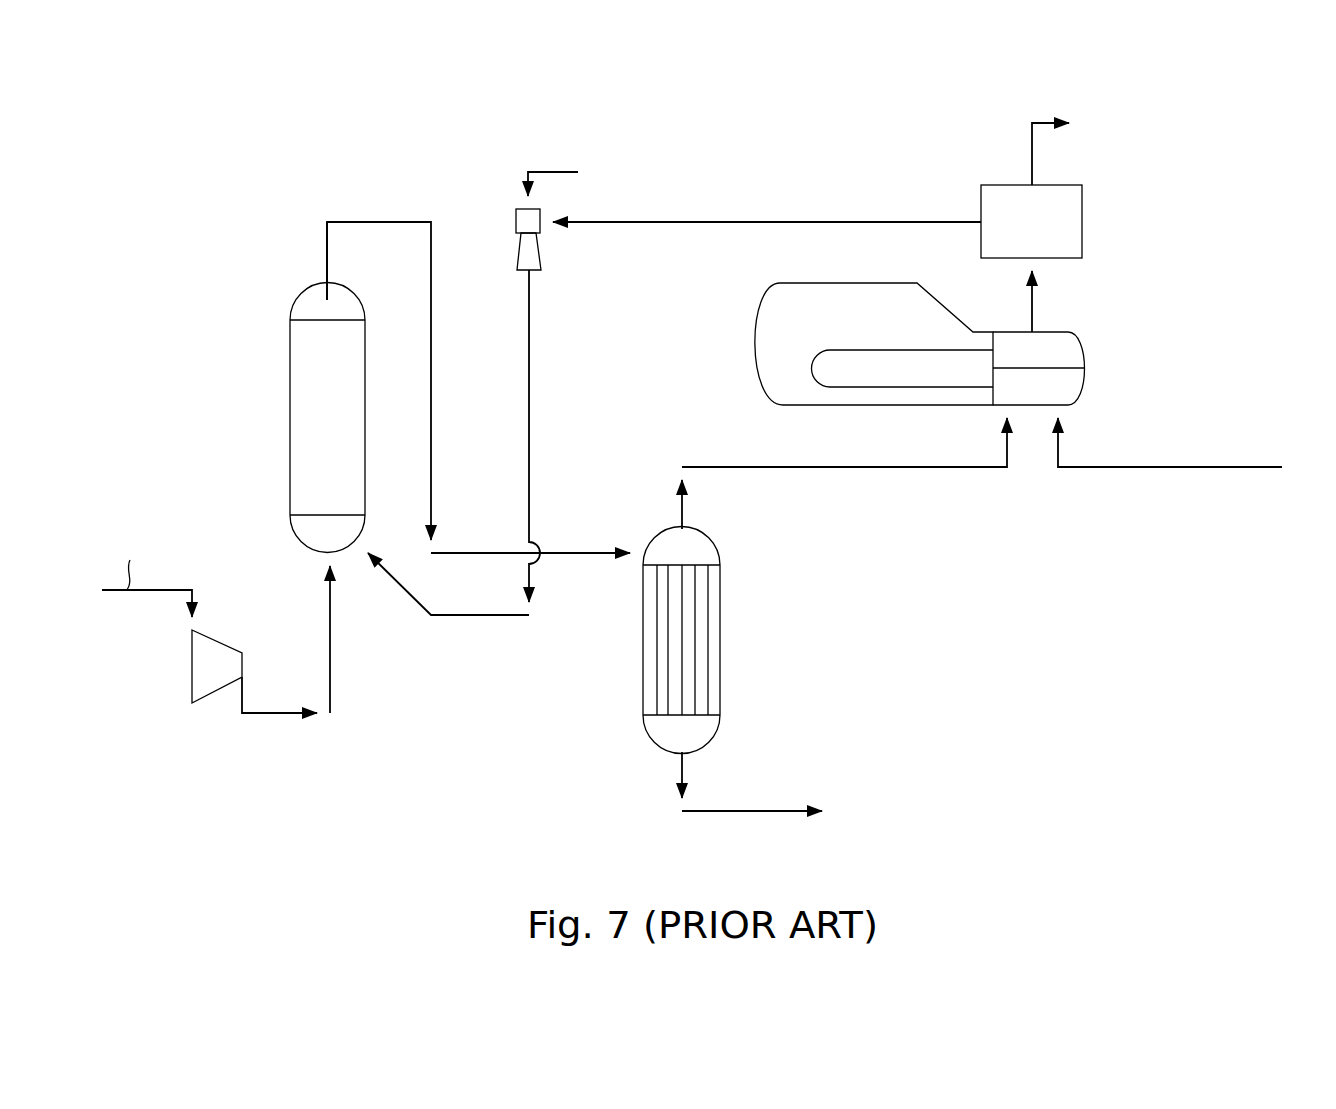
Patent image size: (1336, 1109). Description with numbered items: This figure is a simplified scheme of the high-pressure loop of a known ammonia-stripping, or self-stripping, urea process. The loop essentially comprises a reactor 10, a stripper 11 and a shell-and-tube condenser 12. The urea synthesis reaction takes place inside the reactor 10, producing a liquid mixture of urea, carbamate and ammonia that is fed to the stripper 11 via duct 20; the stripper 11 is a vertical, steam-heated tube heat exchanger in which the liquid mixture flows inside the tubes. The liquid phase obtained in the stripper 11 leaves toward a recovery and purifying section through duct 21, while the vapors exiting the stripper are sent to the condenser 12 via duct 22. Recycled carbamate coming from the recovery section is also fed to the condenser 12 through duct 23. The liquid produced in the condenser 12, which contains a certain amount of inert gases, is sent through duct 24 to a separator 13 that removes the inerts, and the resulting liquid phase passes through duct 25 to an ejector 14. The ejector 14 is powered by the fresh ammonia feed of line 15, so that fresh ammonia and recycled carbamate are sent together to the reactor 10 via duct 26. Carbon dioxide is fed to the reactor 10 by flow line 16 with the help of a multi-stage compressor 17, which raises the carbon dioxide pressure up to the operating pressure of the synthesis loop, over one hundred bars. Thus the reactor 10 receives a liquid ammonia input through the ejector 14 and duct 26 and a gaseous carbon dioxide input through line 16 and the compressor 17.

The reactor 10 is at (300, 418).
The stripper 11 is at (715, 624).
The shell-and-tube condenser 12 is at (834, 283).
The separator 13 is at (1072, 221).
The ejector 14 is at (530, 219).
The fresh ammonia feed line 15 is at (550, 172).
The carbon dioxide flow line 16 is at (330, 612).
The multi-stage compressor 17 is at (206, 682).
The duct 20 is at (375, 222).
The duct 21 is at (783, 811).
The duct 22 is at (738, 467).
The duct 23 is at (1188, 467).
The duct 24 is at (1032, 301).
The duct 25 is at (728, 222).
The duct 26 is at (530, 367).